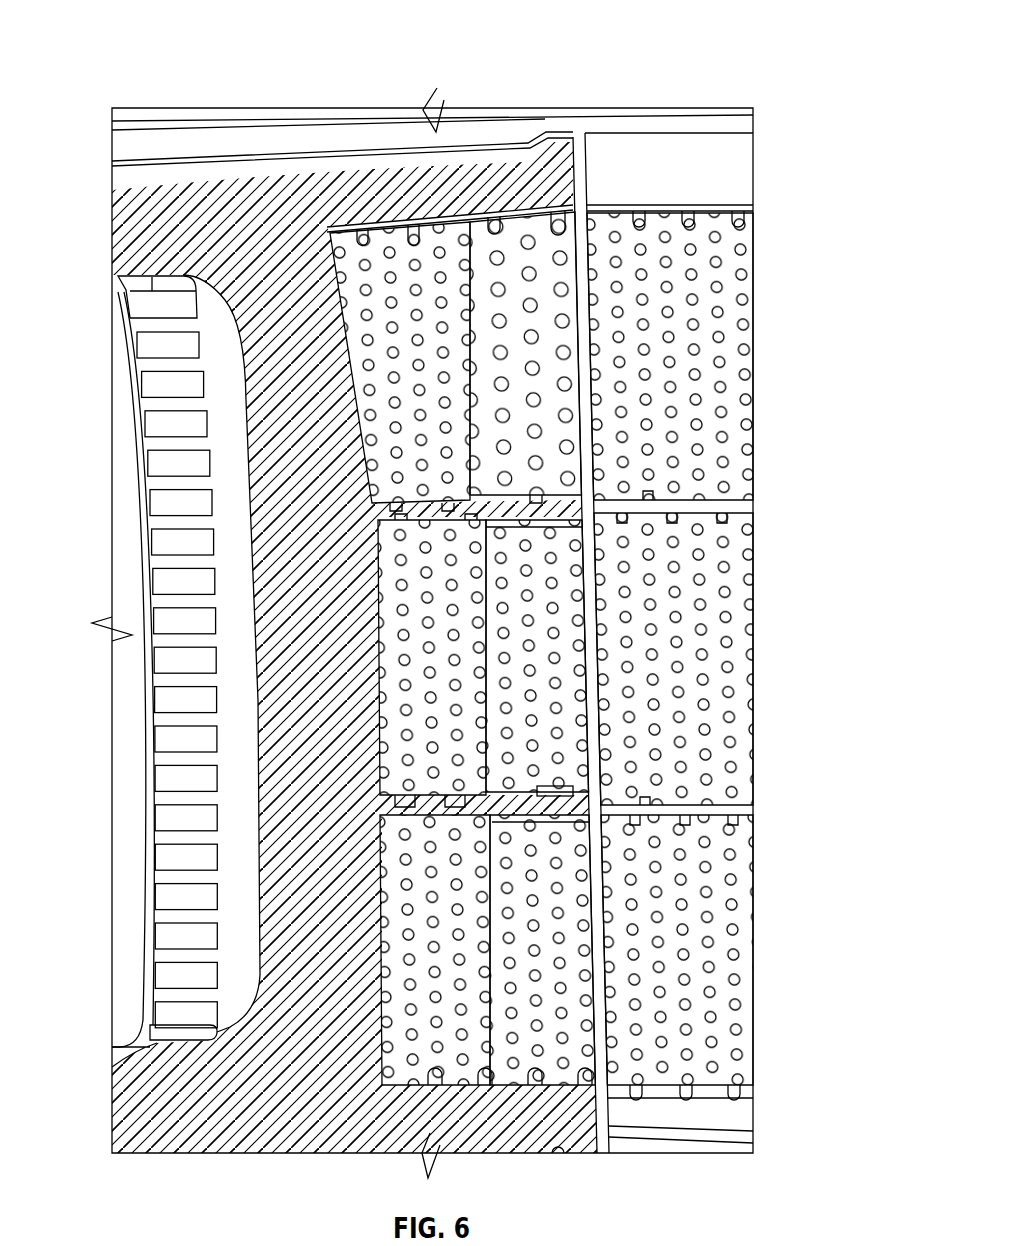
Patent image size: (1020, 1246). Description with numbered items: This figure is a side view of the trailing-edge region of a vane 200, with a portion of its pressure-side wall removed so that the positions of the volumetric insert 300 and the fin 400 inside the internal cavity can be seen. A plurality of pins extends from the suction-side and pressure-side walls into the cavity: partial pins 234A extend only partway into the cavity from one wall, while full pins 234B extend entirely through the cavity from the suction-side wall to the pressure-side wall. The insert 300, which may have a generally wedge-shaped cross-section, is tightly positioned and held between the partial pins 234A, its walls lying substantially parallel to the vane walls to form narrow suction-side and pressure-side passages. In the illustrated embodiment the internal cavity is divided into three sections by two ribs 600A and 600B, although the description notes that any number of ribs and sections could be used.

The vane 200 is at (127, 213).
The partial pins 234A is at (529, 240).
The full pins 234B is at (363, 262).
The volumetric insert 300 is at (738, 258).
The fin 400 is at (560, 237).
The rib 600A is at (487, 495).
The rib 600B is at (490, 792).